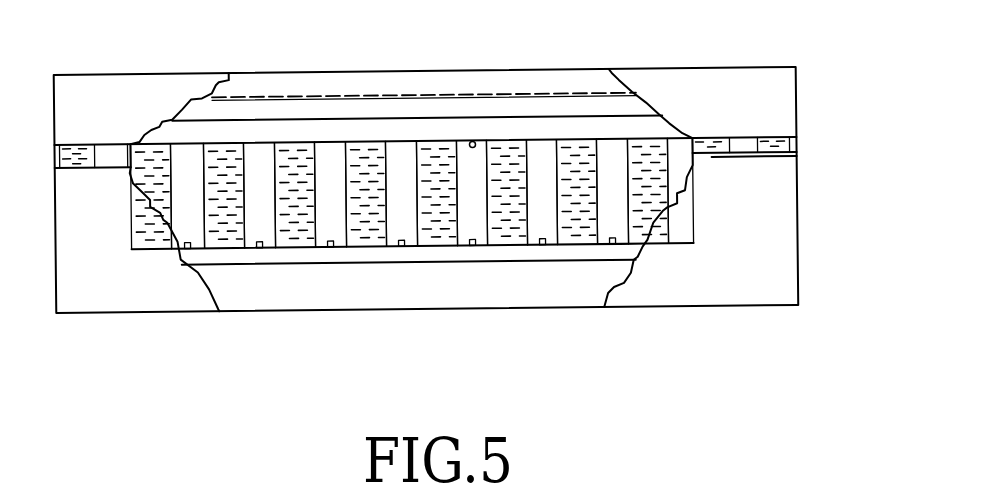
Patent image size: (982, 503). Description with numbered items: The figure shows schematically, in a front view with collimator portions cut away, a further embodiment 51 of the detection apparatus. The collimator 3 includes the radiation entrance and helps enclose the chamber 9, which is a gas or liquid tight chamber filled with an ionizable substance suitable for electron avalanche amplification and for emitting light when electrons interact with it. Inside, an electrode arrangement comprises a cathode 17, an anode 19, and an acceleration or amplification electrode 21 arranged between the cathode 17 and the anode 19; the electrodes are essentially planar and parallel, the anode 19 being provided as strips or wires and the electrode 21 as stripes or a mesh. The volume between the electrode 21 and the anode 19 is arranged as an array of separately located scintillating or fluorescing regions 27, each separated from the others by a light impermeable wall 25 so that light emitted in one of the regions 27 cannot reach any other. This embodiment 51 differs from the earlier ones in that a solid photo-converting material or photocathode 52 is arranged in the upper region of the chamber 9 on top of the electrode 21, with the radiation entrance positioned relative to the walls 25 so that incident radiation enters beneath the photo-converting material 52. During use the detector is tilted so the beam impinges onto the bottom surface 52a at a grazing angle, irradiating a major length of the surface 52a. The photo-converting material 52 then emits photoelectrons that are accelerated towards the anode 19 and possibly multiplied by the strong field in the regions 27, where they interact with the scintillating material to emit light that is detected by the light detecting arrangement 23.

The collimator 3 is at (778, 258).
The further embodiment of the detection apparatus 51 is at (752, 37).
The chamber 9 is at (263, 106).
The cathode 17 is at (400, 96).
The photo-converting material 52 is at (578, 127).
The bottom surface 52a is at (472, 140).
The acceleration or amplification electrode 21 is at (437, 143).
The light impermeable wall 25 is at (367, 227).
The scintillating or fluorescing regions 27 is at (327, 192).
The anode 19 is at (543, 243).
The light detecting arrangement 23 is at (488, 310).